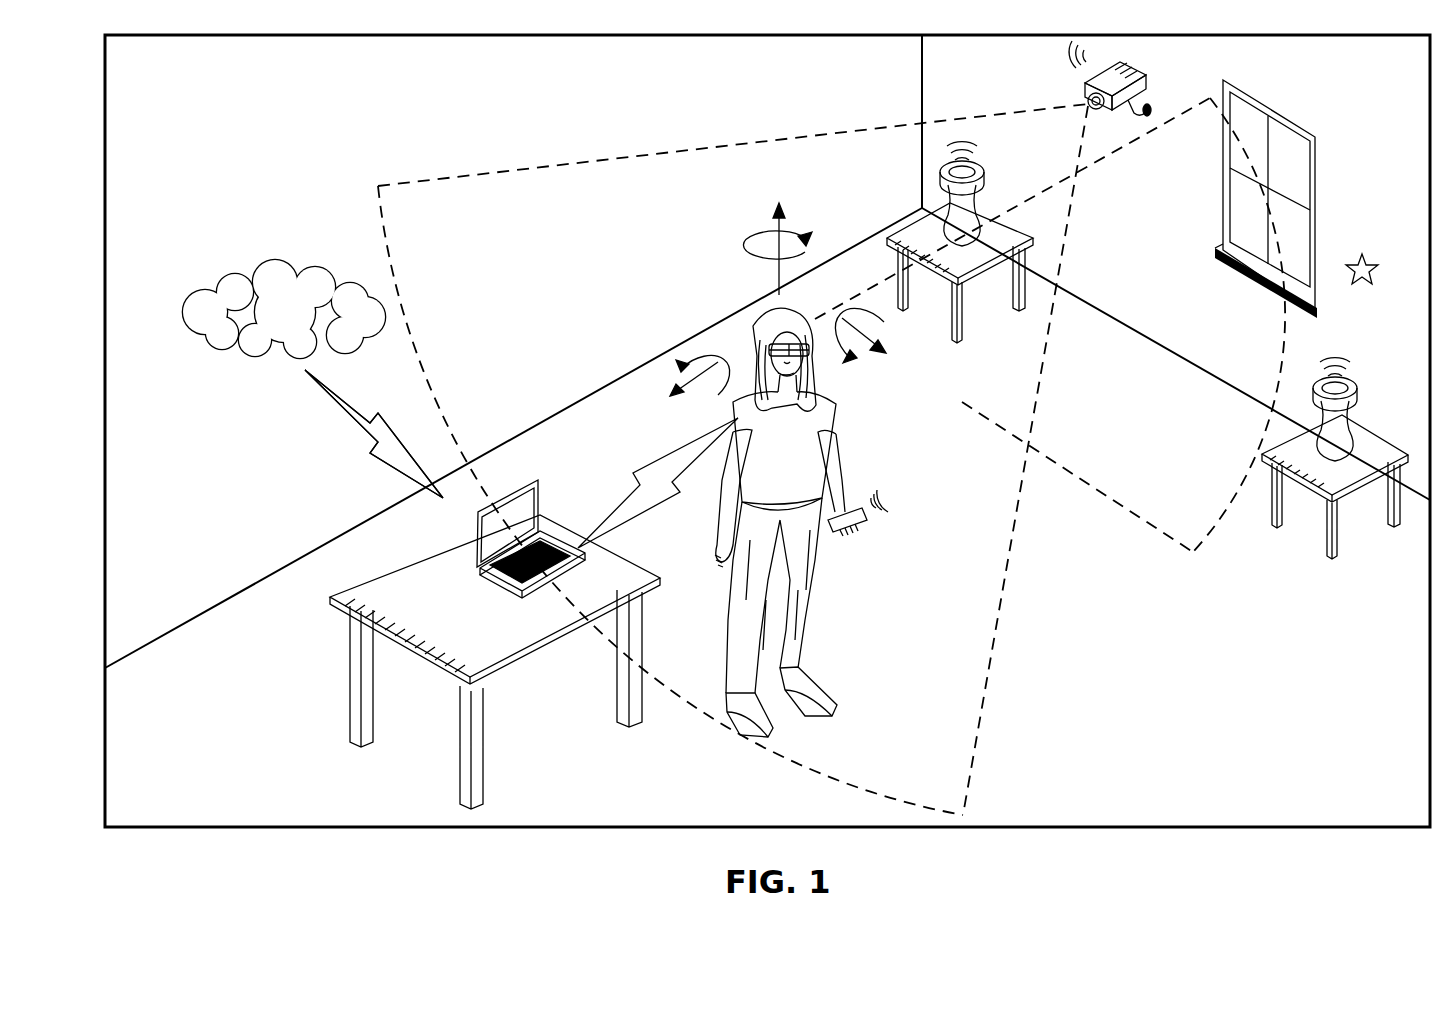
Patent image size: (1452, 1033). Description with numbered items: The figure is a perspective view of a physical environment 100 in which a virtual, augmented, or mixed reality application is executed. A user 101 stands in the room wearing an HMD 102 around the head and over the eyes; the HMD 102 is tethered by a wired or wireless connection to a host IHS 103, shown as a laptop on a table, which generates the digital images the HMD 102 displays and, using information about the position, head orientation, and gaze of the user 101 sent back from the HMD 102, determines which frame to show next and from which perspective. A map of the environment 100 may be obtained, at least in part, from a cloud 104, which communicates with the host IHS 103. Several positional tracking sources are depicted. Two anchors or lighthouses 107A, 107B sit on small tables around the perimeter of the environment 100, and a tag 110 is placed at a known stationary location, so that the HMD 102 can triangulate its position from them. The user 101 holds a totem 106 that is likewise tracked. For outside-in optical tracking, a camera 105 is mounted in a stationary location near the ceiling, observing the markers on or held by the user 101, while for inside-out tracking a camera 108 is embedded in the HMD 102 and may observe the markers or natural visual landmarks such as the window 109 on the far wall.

The physical environment 100 is at (179, 34).
The user 101 is at (810, 592).
The HMD 102 is at (810, 357).
The host IHS 103 is at (478, 530).
The cloud 104 is at (203, 284).
The camera 105 is at (1148, 90).
The totem 106 is at (866, 528).
The lighthouse 107A is at (985, 175).
The lighthouse 107B is at (1357, 393).
The camera 108 is at (797, 323).
The window 109 is at (1316, 160).
The tag 110 is at (1372, 262).